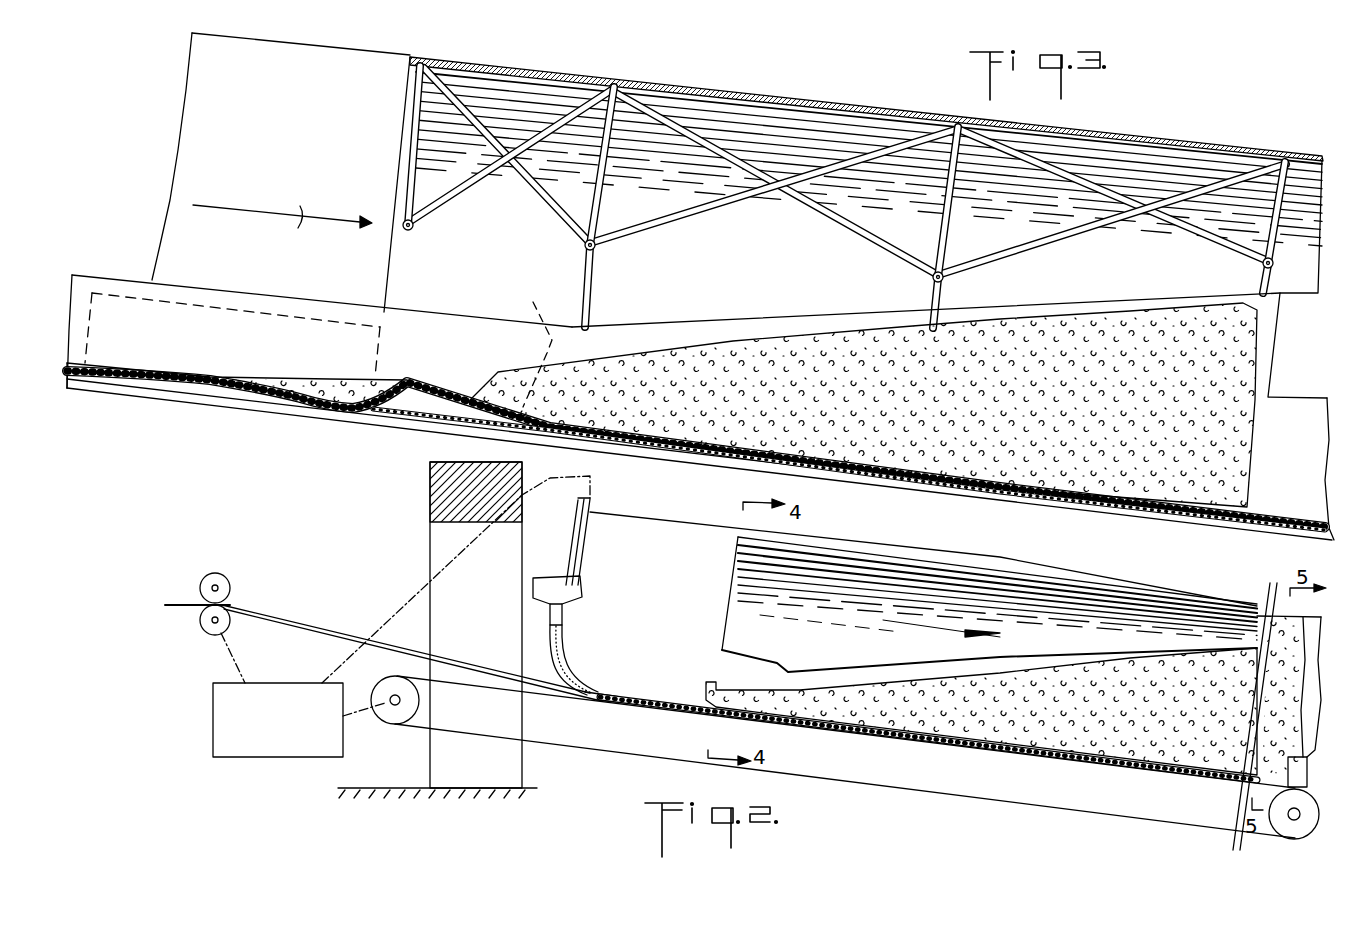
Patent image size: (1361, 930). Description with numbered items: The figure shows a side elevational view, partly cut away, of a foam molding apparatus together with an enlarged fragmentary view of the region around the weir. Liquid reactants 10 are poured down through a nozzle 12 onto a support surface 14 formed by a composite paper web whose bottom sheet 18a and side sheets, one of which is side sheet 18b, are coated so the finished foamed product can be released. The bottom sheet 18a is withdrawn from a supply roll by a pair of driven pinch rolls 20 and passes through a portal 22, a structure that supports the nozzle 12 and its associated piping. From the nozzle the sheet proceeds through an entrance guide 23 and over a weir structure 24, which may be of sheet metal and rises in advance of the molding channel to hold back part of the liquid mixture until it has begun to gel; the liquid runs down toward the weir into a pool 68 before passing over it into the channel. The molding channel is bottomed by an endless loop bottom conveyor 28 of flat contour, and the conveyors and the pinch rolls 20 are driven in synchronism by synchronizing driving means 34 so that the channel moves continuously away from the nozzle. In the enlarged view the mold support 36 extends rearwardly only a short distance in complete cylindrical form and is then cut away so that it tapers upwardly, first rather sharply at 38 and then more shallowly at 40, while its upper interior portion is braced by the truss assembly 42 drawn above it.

In FIG. 2, the liquid reactants 10 is at (568, 656).
In FIG. 2, the nozzle 12 is at (582, 588).
In FIG. 2, the support surface 14 is at (586, 688).
In FIG. 3, the bottom sheet 18a is at (292, 304).
In FIG. 2, the bottom sheet 18a is at (359, 628).
In FIG. 3, the side sheet 18b is at (412, 66).
In FIG. 2, the side sheet 18b is at (673, 528).
In FIG. 2, the driven pinch rolls 20 is at (232, 588).
In FIG. 2, the portal 22 is at (440, 494).
In FIG. 2, the entrance guide 23 is at (665, 684).
In FIG. 3, the weir structure 24 is at (405, 394).
In FIG. 2, the weir structure 24 is at (707, 710).
In FIG. 3, the bottom conveyor 28 is at (190, 400).
In FIG. 2, the bottom conveyor 28 is at (590, 740).
In FIG. 2, the synchronizing driving means 34 is at (281, 683).
In FIG. 3, the mold support 36 is at (564, 75).
In FIG. 2, the mold support 36 is at (738, 596).
In FIG. 3, the sharply tapered portion 38 is at (533, 346).
In FIG. 3, the shallowly tapered portion 40 is at (697, 322).
In FIG. 3, the truss frame 42 is at (787, 203).
In FIG. 3, the pool 68 is at (337, 377).
In FIG. 2, the pool 68 is at (706, 682).